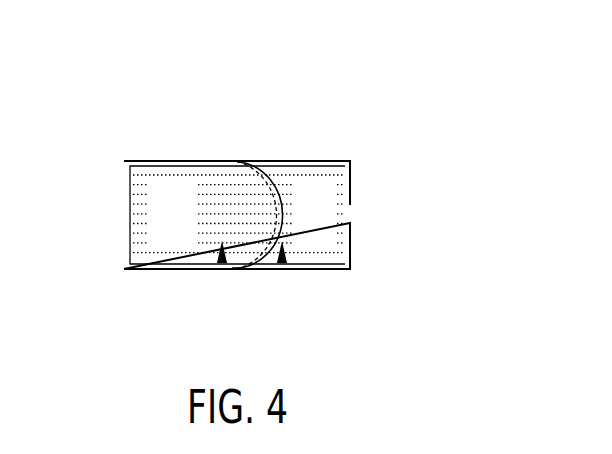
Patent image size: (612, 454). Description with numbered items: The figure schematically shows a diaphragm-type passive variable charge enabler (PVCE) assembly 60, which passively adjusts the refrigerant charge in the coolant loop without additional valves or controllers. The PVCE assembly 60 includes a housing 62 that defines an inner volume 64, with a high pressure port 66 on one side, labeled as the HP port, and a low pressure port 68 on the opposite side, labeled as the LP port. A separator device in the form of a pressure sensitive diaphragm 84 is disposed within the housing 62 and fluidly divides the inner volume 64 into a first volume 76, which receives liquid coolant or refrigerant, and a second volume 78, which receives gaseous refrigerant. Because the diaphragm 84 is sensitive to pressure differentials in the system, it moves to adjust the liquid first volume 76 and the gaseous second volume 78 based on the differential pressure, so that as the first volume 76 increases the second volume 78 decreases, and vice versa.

The passive variable charge enabler (PVCE) assembly 60 is at (318, 98).
The housing 62 is at (177, 270).
The inner volume 64 is at (281, 265).
The high pressure port 66 is at (123, 215).
The low pressure port 68 is at (350, 213).
The first volume 76 is at (190, 163).
The second volume 78 is at (330, 165).
The pressure sensitive diaphragm 84 is at (268, 178).